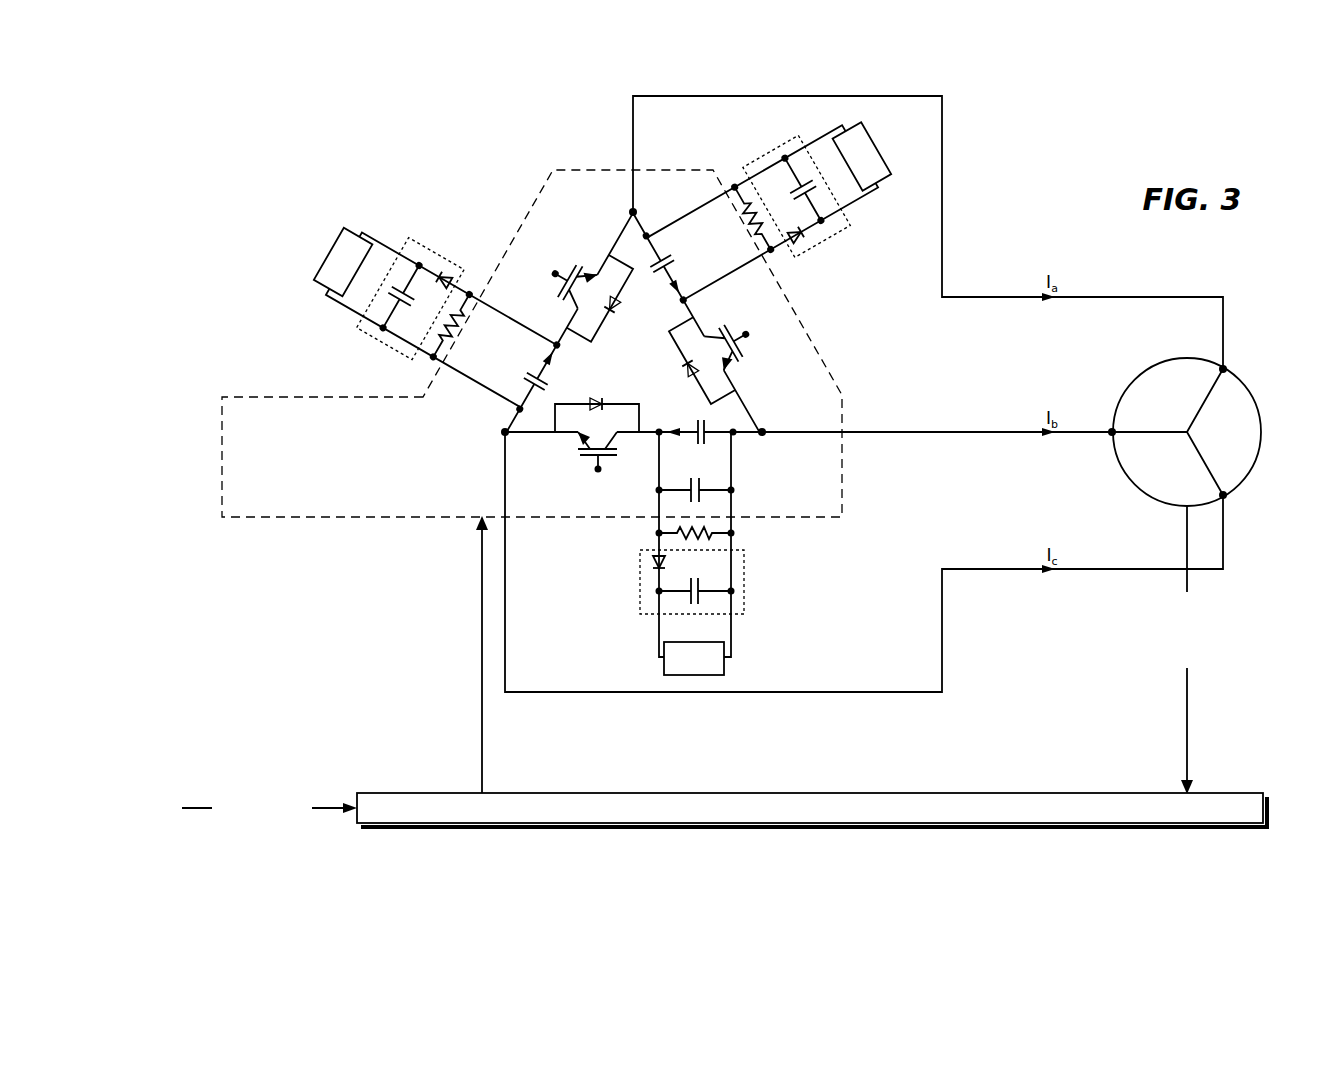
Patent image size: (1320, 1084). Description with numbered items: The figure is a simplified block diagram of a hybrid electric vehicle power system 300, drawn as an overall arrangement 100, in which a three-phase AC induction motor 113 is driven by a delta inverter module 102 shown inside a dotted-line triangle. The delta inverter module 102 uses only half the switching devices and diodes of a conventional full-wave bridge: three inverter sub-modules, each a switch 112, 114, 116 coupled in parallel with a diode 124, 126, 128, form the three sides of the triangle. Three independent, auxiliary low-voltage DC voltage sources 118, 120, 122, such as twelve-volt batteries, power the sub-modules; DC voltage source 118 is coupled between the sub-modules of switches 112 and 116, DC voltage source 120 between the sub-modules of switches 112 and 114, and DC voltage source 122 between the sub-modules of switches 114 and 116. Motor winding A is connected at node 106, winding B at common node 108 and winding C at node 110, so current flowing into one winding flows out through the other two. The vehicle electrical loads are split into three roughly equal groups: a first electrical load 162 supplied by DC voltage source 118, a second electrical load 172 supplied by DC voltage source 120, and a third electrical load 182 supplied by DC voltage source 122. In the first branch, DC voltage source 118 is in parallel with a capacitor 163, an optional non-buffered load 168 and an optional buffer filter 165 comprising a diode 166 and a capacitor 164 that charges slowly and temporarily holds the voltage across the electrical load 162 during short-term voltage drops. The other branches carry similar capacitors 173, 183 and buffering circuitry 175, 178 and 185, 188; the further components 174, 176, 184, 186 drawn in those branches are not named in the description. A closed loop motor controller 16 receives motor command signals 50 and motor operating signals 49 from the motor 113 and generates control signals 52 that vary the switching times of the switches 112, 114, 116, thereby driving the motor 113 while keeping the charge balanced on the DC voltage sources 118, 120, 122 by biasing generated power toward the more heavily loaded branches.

The HEV power system 300 is at (236, 188).
The motor control system 100 is at (316, 742).
The delta inverter module 102 is at (353, 517).
The node 106 is at (628, 208).
The common node 108 is at (767, 430).
The node 110 is at (500, 436).
The switch 112 is at (572, 270).
The switch 114 is at (750, 347).
The switch 116 is at (586, 458).
The DC voltage source 118 is at (523, 360).
The DC voltage source 120 is at (655, 245).
The DC voltage source 122 is at (712, 440).
The diode 124 is at (612, 306).
The diode 126 is at (600, 403).
The diode 128 is at (688, 372).
The first electrical load 162 is at (336, 242).
The capacitor 163 is at (492, 384).
The capacitor 164 is at (390, 310).
The buffer filter 165 is at (410, 242).
The diode 166 is at (447, 276).
The non-buffered load 168 is at (440, 332).
The second electrical load 172 is at (886, 170).
The capacitor 173 is at (704, 272).
The second load capacitor 174 is at (822, 212).
The buffering circuitry 175 is at (775, 150).
The second load diode 176 is at (800, 238).
The buffering circuitry 178 is at (750, 212).
The third electrical load 182 is at (664, 664).
The capacitor 183 is at (672, 489).
The third load snubber capacitor 184 is at (700, 598).
The buffering circuitry 185 is at (640, 562).
The third load diode 186 is at (652, 566).
The buffering circuitry 188 is at (705, 531).
The three-phase AC induction motor 113 is at (1183, 358).
The motor operating signals 49 is at (1185, 690).
The closed loop motor controller 16 is at (918, 792).
The control signals 52 is at (480, 775).
The motor command signals 50 is at (195, 810).